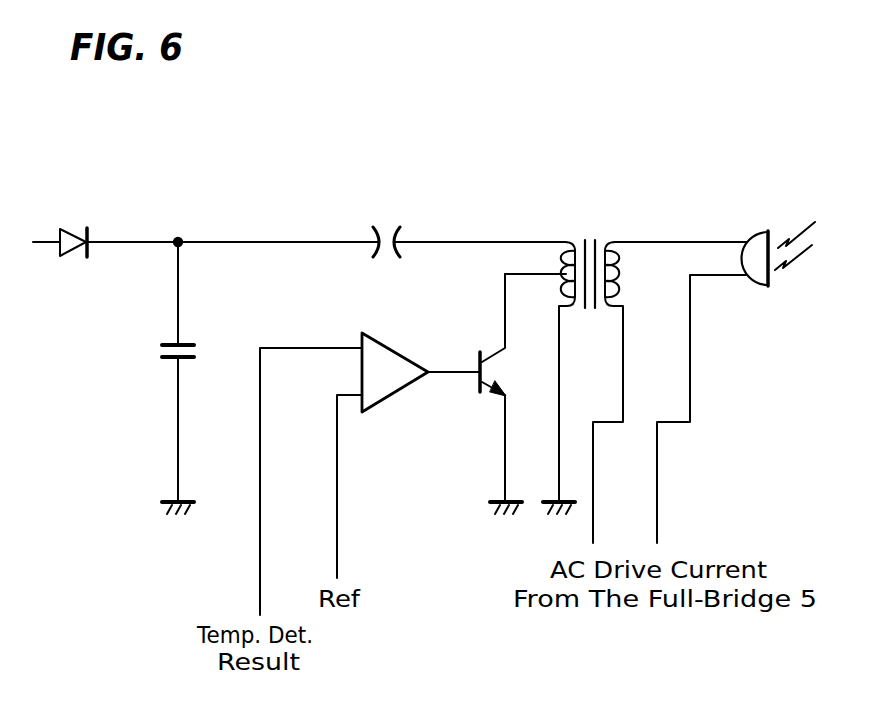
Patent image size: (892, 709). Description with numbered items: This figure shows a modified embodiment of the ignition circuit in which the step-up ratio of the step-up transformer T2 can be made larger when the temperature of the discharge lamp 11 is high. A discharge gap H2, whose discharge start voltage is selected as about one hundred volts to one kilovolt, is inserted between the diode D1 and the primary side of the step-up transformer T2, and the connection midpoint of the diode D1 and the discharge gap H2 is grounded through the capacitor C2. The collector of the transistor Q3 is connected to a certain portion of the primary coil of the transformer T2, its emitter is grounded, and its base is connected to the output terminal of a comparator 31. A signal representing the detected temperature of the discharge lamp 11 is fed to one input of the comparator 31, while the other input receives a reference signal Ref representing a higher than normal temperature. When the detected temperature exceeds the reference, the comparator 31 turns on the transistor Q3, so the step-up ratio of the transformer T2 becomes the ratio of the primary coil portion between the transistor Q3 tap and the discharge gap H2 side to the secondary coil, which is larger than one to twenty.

The diode D1 is at (73, 227).
The capacitor C2 is at (163, 378).
The discharge gap H2 is at (386, 227).
The step-up transformer T2 is at (564, 378).
The transistor Q3 is at (496, 394).
The comparator 31 is at (388, 401).
The discharge lamp 11 is at (766, 231).